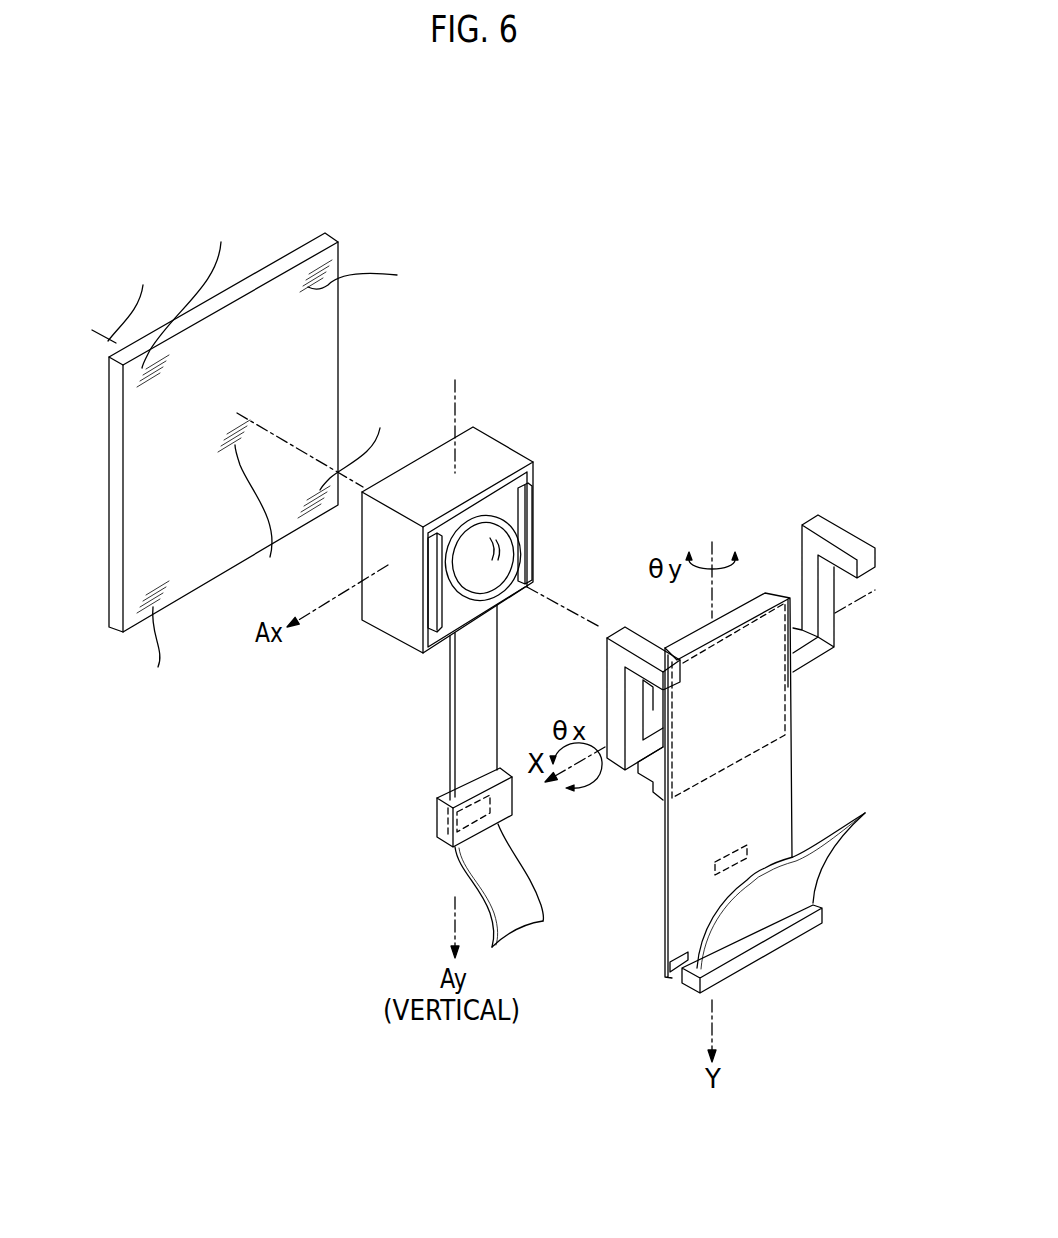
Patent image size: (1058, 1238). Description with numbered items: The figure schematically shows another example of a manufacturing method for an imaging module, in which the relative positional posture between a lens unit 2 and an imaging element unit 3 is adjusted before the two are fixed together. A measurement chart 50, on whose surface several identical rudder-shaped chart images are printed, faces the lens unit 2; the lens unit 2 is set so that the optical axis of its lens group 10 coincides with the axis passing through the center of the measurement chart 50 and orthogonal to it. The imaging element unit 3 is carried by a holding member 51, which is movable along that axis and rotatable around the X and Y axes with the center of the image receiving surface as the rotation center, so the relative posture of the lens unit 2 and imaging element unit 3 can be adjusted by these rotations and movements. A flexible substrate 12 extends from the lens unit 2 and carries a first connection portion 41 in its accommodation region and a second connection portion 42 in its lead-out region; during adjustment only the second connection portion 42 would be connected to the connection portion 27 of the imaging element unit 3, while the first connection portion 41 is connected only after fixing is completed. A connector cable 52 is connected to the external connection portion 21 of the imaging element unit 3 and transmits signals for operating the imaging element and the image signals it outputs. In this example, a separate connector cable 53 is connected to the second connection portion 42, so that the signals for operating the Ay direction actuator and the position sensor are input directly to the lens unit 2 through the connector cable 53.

The lens unit 2 is at (478, 518).
The imaging element unit 3 is at (743, 707).
The lens group 10 is at (497, 533).
The flexible substrate 12 is at (447, 770).
The external connection portion 21 is at (688, 960).
The connection portion 27 is at (750, 843).
The first connection portion 41 is at (430, 600).
The second connection portion 42 is at (490, 805).
The measurement chart 50 is at (352, 250).
The holding member 51 is at (806, 513).
The connector cable 52 is at (823, 912).
The connector cable 53 is at (520, 883).